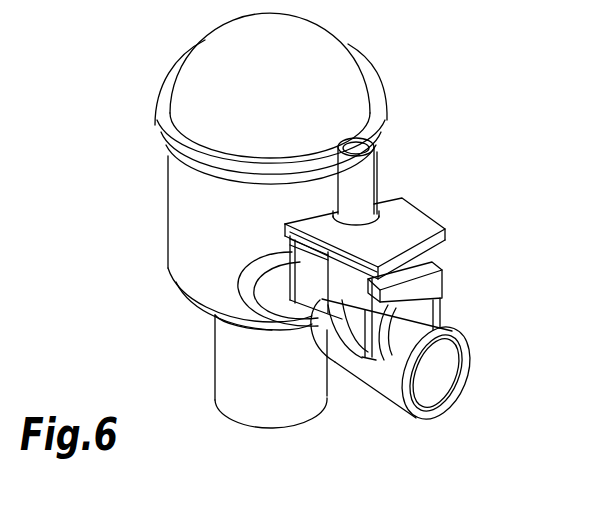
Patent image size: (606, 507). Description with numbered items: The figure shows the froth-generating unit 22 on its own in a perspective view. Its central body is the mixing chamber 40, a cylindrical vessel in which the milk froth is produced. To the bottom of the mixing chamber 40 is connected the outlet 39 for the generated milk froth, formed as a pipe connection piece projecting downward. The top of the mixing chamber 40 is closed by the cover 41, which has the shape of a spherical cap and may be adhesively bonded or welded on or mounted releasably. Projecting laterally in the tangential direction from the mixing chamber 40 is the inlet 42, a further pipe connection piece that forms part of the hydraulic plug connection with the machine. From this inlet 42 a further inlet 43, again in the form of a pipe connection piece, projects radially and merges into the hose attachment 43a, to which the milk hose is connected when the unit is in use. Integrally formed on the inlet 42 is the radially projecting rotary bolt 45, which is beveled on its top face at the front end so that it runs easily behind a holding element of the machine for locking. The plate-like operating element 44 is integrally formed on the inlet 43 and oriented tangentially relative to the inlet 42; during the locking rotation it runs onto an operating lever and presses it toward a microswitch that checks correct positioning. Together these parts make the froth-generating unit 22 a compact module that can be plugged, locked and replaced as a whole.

The froth-generating unit 22 is at (428, 128).
The outlet 39 is at (230, 366).
The mixing chamber 40 is at (190, 255).
The cover 41 is at (198, 80).
The inlet 42 is at (378, 378).
The further inlet 43 is at (343, 285).
The hose attachment 43a is at (362, 186).
The plate-like operating element 44 is at (420, 226).
The rotary bolt 45 is at (410, 286).